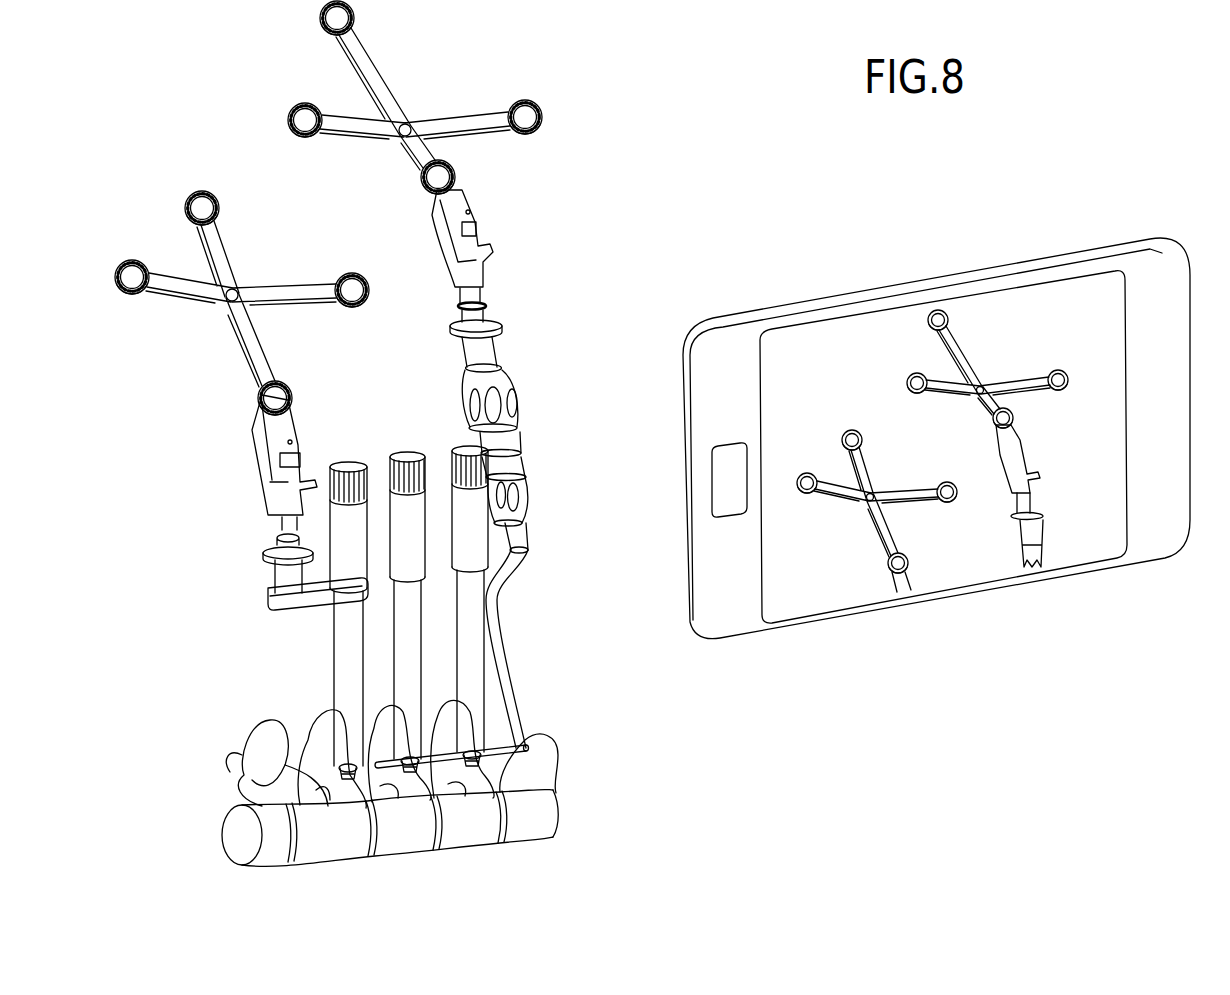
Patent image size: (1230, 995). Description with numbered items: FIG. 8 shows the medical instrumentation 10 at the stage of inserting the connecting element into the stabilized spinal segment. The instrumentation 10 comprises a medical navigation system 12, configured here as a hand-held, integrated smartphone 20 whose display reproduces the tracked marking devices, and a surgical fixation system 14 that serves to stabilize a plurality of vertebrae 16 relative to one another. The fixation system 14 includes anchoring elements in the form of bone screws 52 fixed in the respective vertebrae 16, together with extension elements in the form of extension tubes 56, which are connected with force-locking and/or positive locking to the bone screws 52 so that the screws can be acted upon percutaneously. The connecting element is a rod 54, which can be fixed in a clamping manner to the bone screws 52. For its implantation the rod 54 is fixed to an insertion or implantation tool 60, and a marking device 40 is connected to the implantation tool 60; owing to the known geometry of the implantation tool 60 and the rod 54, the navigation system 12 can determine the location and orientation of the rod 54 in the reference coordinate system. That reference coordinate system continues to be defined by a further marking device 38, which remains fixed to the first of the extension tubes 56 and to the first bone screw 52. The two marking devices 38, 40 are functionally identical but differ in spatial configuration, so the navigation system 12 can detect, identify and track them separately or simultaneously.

The medical instrumentation 10 is at (606, 104).
The medical navigation system 12 is at (1043, 243).
The surgical fixation system 14 is at (190, 172).
The vertebrae 16 is at (278, 840).
The smartphone 20 is at (1143, 542).
The medical marking device 38 is at (200, 333).
The medical marking device 40 is at (425, 92).
The bone screws 52 is at (347, 770).
The rod 54 is at (522, 752).
The extension tubes 56 is at (348, 630).
The implantation tool 60 is at (532, 368).